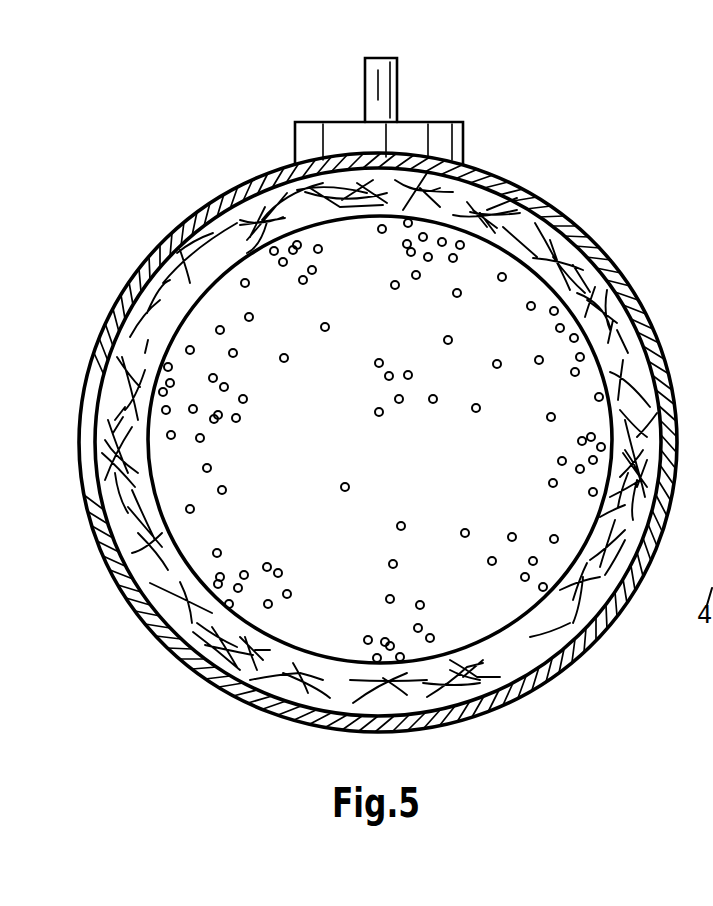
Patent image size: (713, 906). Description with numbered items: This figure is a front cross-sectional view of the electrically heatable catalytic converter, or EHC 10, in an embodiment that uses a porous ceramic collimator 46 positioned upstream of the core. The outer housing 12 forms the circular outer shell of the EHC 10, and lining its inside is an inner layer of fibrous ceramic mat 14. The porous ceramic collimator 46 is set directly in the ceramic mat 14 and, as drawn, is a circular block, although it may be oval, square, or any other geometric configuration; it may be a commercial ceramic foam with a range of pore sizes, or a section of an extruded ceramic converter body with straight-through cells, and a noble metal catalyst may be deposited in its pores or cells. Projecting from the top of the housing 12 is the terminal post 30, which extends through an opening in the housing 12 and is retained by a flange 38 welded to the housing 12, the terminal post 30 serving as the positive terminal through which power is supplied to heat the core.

The EHC 10 is at (395, 390).
The housing 12 is at (556, 210).
The inner layer of fibrous ceramic mat 14 is at (577, 287).
The terminal post 30 is at (380, 88).
The flange 38 is at (443, 138).
The porous ceramic collimator 46 is at (462, 592).